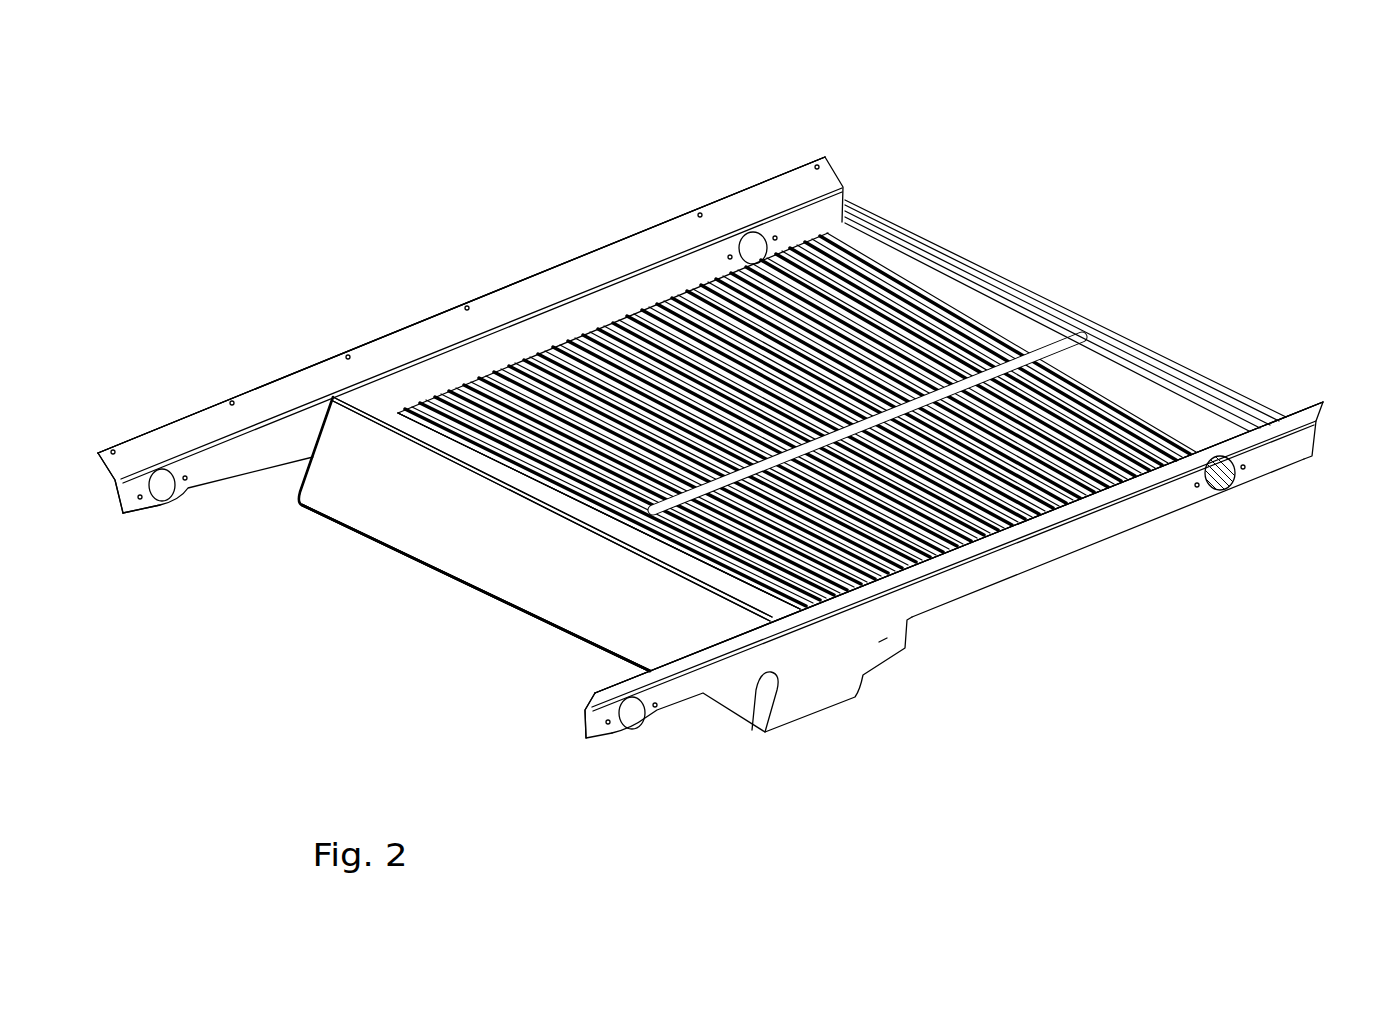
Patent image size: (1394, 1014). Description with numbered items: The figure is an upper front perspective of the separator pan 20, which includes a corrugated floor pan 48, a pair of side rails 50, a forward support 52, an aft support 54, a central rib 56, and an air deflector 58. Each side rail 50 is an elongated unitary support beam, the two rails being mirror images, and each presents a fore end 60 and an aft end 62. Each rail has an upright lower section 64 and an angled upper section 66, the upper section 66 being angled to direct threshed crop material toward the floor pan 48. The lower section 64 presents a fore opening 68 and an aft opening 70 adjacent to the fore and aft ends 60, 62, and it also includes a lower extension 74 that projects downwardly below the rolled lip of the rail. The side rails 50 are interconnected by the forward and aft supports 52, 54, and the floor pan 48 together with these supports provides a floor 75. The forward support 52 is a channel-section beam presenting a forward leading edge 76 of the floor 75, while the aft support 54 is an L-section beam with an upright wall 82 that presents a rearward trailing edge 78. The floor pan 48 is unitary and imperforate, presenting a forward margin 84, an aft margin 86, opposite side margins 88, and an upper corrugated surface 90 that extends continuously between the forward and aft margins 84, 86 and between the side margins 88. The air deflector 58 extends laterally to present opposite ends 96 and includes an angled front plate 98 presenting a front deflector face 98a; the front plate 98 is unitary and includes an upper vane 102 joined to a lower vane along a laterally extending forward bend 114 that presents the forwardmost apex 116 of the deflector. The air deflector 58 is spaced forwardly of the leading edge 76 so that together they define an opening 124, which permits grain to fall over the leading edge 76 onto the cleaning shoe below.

The separator pan 20 is at (1114, 192).
The corrugated floor pan 48 is at (1037, 520).
The side rails 50 is at (520, 336).
The forward support 52 is at (472, 453).
The aft support 54 is at (1150, 343).
The central rib 56 is at (1040, 348).
The air deflector 58 is at (587, 600).
The fore end 60 is at (115, 503).
The aft end 62 is at (832, 162).
The lower section 64 is at (258, 447).
The upper section 66 is at (281, 396).
The fore opening 68 is at (168, 490).
The aft opening 70 is at (751, 235).
The lower extension 74 is at (817, 697).
The floor 75 is at (897, 262).
The leading edge 76 is at (537, 478).
The trailing edge 78 is at (1003, 290).
The upright wall 82 is at (1137, 317).
The forward margin 84 is at (755, 593).
The aft margin 86 is at (958, 276).
The side margins 88 is at (600, 322).
The upper corrugated surface 90 is at (678, 297).
The opposite ends 96 is at (313, 450).
The front plate 98 is at (320, 490).
The front deflector face 98a is at (337, 497).
The upper vane 102 is at (515, 560).
The forward bend 114 is at (524, 613).
The forwardmost apex 116 is at (590, 647).
The opening 124 is at (384, 396).